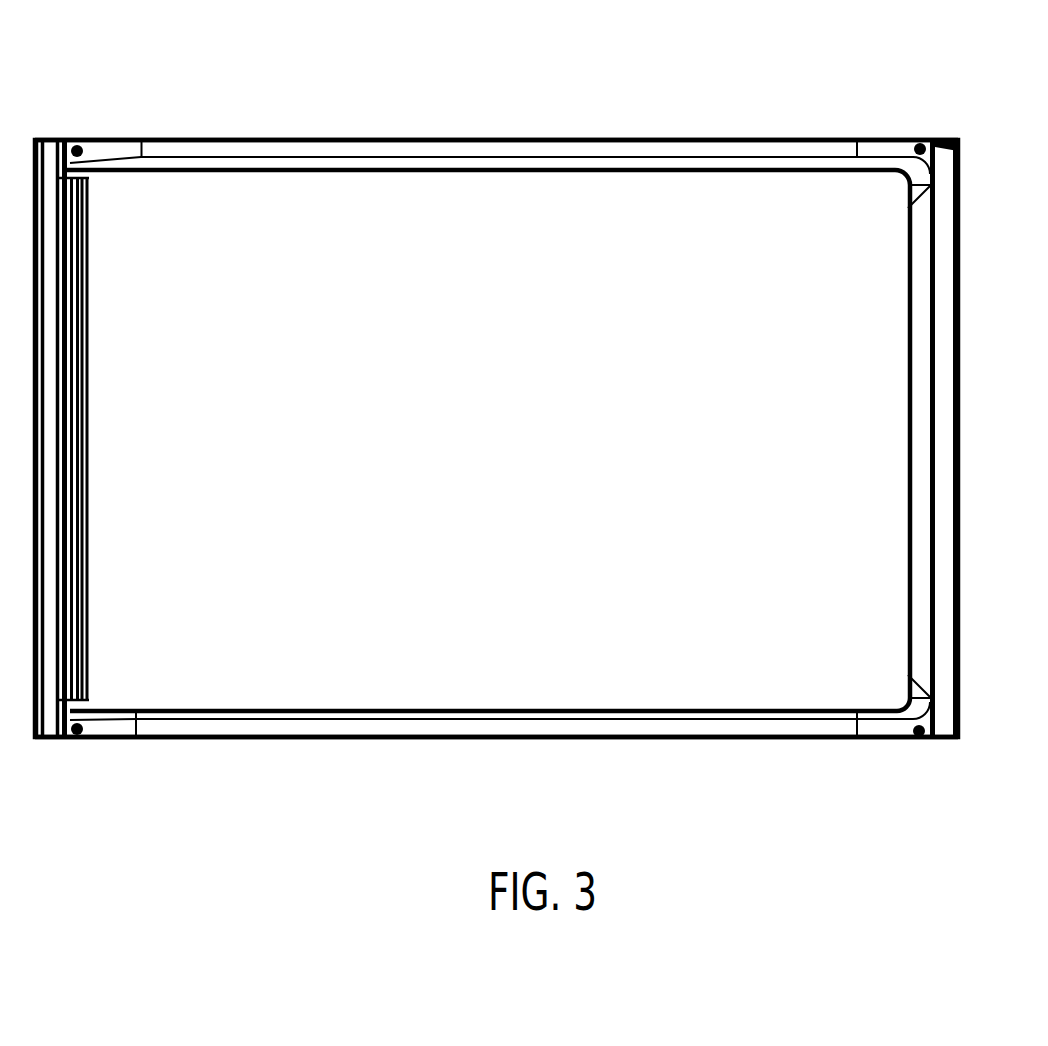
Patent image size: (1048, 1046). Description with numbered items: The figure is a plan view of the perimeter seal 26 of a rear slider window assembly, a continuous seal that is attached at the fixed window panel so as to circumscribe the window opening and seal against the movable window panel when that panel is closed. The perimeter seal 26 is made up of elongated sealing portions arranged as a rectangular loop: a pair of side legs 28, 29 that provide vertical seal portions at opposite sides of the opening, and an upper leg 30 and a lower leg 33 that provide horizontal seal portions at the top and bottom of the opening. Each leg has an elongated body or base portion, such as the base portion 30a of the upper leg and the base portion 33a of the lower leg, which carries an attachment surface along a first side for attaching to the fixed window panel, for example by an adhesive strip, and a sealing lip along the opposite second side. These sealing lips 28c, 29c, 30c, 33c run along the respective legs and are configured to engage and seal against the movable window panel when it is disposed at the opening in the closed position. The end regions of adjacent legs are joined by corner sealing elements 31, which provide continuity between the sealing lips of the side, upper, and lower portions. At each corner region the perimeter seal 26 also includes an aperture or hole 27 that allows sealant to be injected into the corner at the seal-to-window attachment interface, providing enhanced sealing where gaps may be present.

The perimeter seal 26 is at (397, 84).
The aperture or hole 27 is at (83, 141).
The side leg 28 is at (906, 445).
The sealing lip 28c is at (950, 280).
The side leg 29 is at (88, 408).
The sealing lip 29c is at (92, 275).
The upper leg 30 is at (520, 137).
The base portion 30a is at (278, 140).
The sealing lip 30c is at (396, 172).
The corner sealing element 31 is at (930, 178).
The lower leg 33 is at (375, 740).
The base portion 33a is at (540, 708).
The sealing lip 33c is at (715, 738).